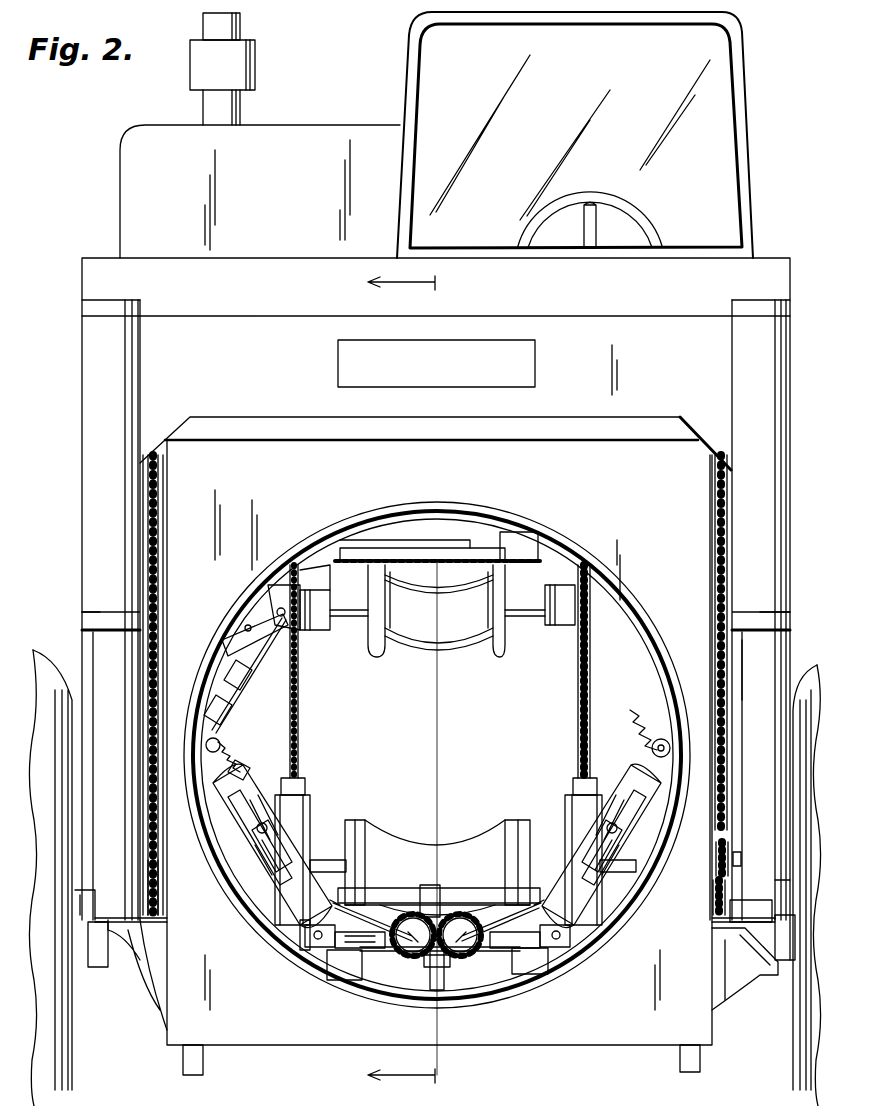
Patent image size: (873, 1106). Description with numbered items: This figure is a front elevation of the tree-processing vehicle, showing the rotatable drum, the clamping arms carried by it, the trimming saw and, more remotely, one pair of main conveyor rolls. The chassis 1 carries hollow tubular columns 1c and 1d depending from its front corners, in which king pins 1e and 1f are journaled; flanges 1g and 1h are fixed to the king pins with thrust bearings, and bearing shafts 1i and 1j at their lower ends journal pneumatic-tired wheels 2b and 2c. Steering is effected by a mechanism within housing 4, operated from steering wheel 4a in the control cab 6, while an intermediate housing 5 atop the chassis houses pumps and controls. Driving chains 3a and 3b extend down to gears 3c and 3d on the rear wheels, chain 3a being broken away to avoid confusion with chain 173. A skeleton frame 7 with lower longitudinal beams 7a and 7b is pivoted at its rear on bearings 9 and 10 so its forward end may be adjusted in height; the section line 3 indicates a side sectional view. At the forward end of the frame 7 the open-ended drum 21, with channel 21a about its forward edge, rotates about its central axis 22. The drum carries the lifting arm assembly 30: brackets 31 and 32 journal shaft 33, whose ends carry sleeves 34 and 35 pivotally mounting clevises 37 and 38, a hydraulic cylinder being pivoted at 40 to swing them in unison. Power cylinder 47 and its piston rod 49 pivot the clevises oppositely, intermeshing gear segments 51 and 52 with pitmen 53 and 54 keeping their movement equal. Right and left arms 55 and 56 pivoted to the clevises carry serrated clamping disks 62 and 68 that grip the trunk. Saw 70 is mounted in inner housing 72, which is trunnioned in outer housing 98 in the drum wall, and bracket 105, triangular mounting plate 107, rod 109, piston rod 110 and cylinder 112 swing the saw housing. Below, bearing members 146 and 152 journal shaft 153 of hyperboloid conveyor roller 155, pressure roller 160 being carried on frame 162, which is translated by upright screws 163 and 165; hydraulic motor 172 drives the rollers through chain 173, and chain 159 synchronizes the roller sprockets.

The chassis 1 is at (766, 238).
The tubular column 1c is at (750, 383).
The tubular column 1d is at (86, 433).
The king pin 1e is at (760, 652).
The king pin 1f is at (92, 644).
The flange 1g is at (758, 608).
The flange 1h is at (86, 593).
The bearing shaft 1i is at (790, 880).
The bearing shaft 1j is at (78, 890).
The pneumatic-tired wheel 2b is at (812, 702).
The pneumatic-tired wheel 2c is at (50, 672).
The section line 3 is at (414, 679).
The driving chain 3a is at (716, 516).
The driving chain 3b is at (160, 490).
The gear 3c is at (712, 892).
The gear 3d is at (158, 878).
The steering housing 4 is at (95, 288).
The steering wheel 4a is at (657, 229).
The intermediate housing 5 is at (133, 166).
The control cab 6 is at (750, 142).
The frame 7 is at (249, 1057).
The lower longitudinal beam 7a is at (740, 975).
The lower longitudinal beam 7b is at (138, 985).
The pivot bearing 9 is at (790, 960).
The pivot bearing 10 is at (98, 968).
The drum 21 is at (560, 548).
The channel 21a is at (300, 945).
The drum axis 22 is at (440, 752).
The lifting arm assembly 30 is at (251, 887).
The bracket 31 is at (532, 968).
The bracket 32 is at (346, 968).
The shaft 33 is at (360, 952).
The sleeve 34 is at (562, 950).
The sleeve 35 is at (318, 950).
The clevis 37 is at (605, 900).
The clevis 38 is at (276, 912).
The cylinder pivot 40 is at (430, 990).
The hydraulic power cylinder 47 is at (388, 900).
The piston rod 49 is at (446, 900).
The gear segment 51 is at (468, 950).
The gear segment 52 is at (405, 950).
The pitman 53 is at (500, 915).
The pitman 54 is at (362, 902).
The right arm 55 is at (640, 775).
The left arm 56 is at (249, 763).
The clamping disk 62 is at (626, 722).
The clamping disk 68 is at (262, 738).
The saw 70 is at (462, 558).
The inner housing 72 is at (455, 528).
The outer housing 98 is at (505, 536).
The bracket 105 is at (247, 620).
The mounting plate 107 is at (278, 590).
The rod 109 is at (297, 628).
The piston rod 110 is at (252, 675).
The cylinder 112 is at (238, 698).
The bearing member 146 is at (312, 802).
The bearing member 152 is at (568, 800).
The shaft 153 is at (323, 862).
The conveyor roller 155 is at (432, 848).
The chain 159 is at (740, 858).
The pressure roller 160 is at (412, 640).
The frame 162 is at (316, 560).
The screw 163 is at (300, 708).
The screw 165 is at (595, 678).
The hydraulic motor 172 is at (735, 921).
The chain 173 is at (716, 862).